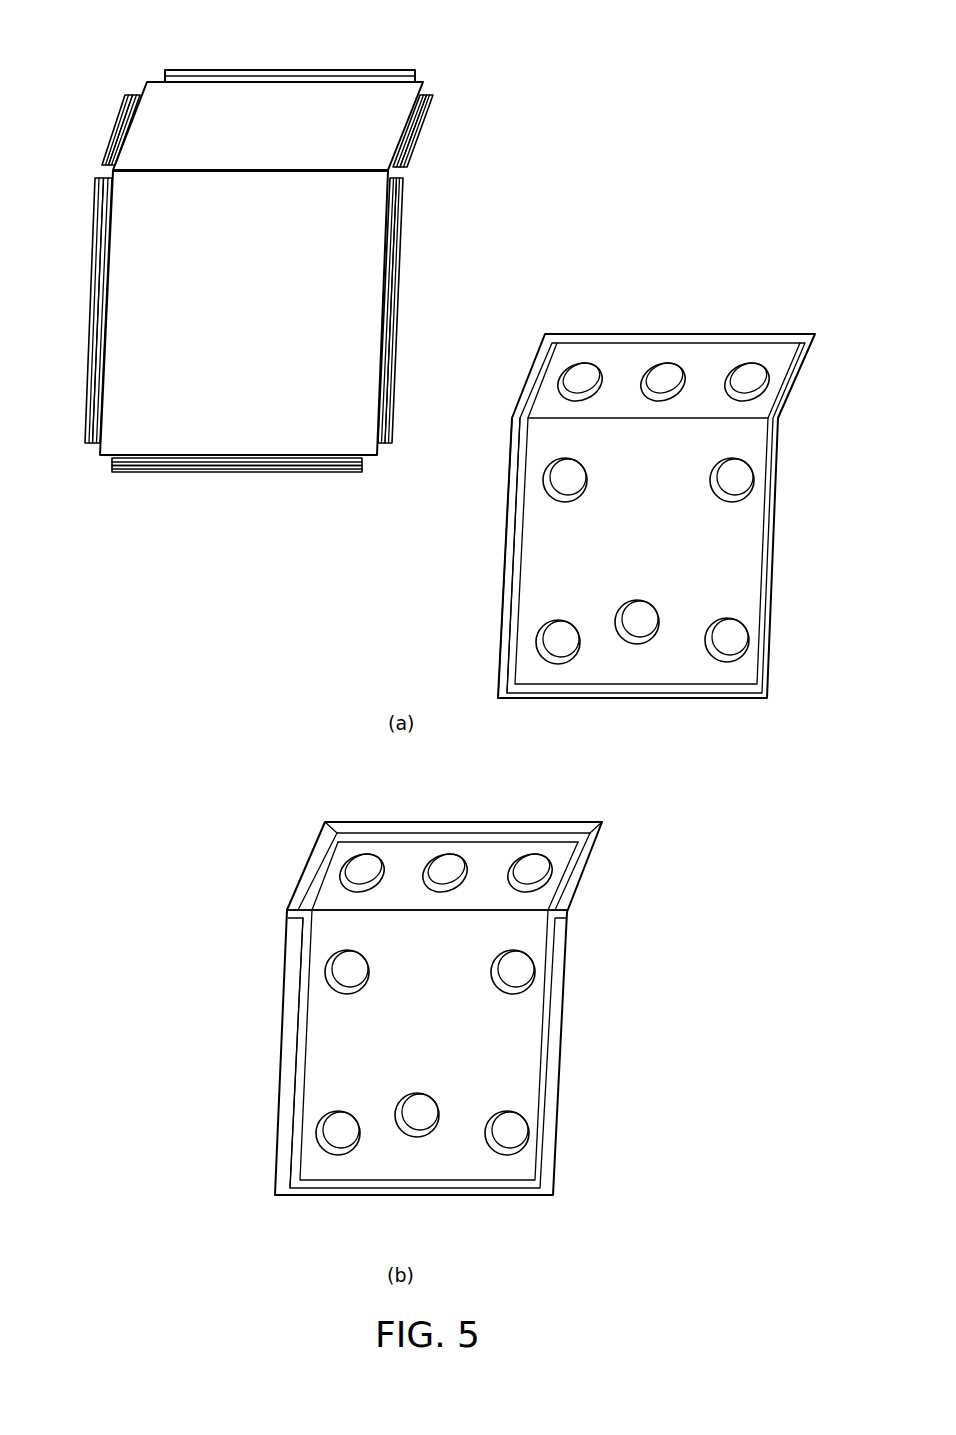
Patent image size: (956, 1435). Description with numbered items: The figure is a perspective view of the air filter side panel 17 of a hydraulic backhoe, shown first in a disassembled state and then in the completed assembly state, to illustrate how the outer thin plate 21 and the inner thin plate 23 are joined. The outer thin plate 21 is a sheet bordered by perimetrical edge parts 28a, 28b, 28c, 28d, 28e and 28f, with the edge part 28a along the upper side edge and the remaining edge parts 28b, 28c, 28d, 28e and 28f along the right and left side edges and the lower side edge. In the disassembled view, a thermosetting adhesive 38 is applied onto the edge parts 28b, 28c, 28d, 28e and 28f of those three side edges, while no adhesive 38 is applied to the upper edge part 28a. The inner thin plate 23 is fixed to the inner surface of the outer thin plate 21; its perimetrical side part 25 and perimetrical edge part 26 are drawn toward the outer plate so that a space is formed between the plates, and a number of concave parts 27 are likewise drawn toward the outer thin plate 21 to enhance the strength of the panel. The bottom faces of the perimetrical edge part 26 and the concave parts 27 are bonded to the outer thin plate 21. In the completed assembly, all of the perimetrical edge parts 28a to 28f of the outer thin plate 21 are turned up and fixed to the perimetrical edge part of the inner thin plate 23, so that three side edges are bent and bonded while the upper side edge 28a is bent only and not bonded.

The air filter side panel 17 is at (581, 821).
The outer thin plate 21 is at (394, 89).
The inner thin plate 23 is at (694, 345).
The perimetrical side part 25 is at (522, 463).
The perimetrical edge part 26 is at (510, 513).
The concave part 27 is at (757, 380).
The perimetrical edge part of upper side edge 28a is at (277, 70).
The perimetrical edge part 28b is at (433, 100).
The perimetrical edge part 28c is at (402, 265).
The perimetrical edge part of lower side edge 28d is at (233, 468).
The perimetrical edge part 28e is at (90, 290).
The perimetrical edge part 28f is at (121, 109).
The thermosetting adhesive 38 is at (112, 143).